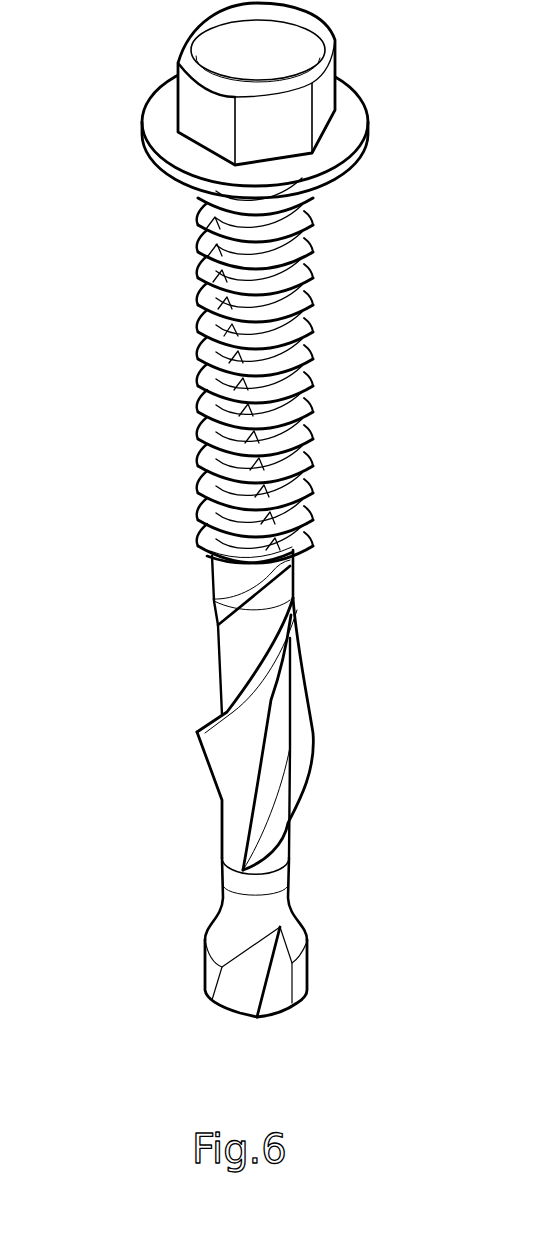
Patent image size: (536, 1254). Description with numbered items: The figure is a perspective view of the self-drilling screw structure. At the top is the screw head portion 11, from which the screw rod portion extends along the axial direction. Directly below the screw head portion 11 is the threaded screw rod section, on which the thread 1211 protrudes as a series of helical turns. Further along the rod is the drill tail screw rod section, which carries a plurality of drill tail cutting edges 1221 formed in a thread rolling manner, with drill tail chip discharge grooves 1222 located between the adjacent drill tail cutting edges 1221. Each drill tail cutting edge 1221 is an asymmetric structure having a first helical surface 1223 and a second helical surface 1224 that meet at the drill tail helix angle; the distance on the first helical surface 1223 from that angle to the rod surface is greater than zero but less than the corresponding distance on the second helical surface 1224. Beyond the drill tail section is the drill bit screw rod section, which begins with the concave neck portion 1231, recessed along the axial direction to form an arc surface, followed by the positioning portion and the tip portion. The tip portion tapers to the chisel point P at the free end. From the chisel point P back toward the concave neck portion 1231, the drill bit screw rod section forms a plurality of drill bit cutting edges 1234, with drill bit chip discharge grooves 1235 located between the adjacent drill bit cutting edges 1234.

The screw head portion 11 is at (327, 90).
The thread 1211 is at (290, 330).
The drill tail cutting edge 1221 is at (197, 732).
The drill tail chip discharge groove 1222 is at (237, 836).
The first helical surface 1223 is at (242, 687).
The second helical surface 1224 is at (217, 748).
The concave neck portion 1231 is at (280, 905).
The drill bit cutting edge 1234 is at (233, 983).
The drill bit chip discharge groove 1235 is at (280, 983).
The chisel point P is at (257, 1017).